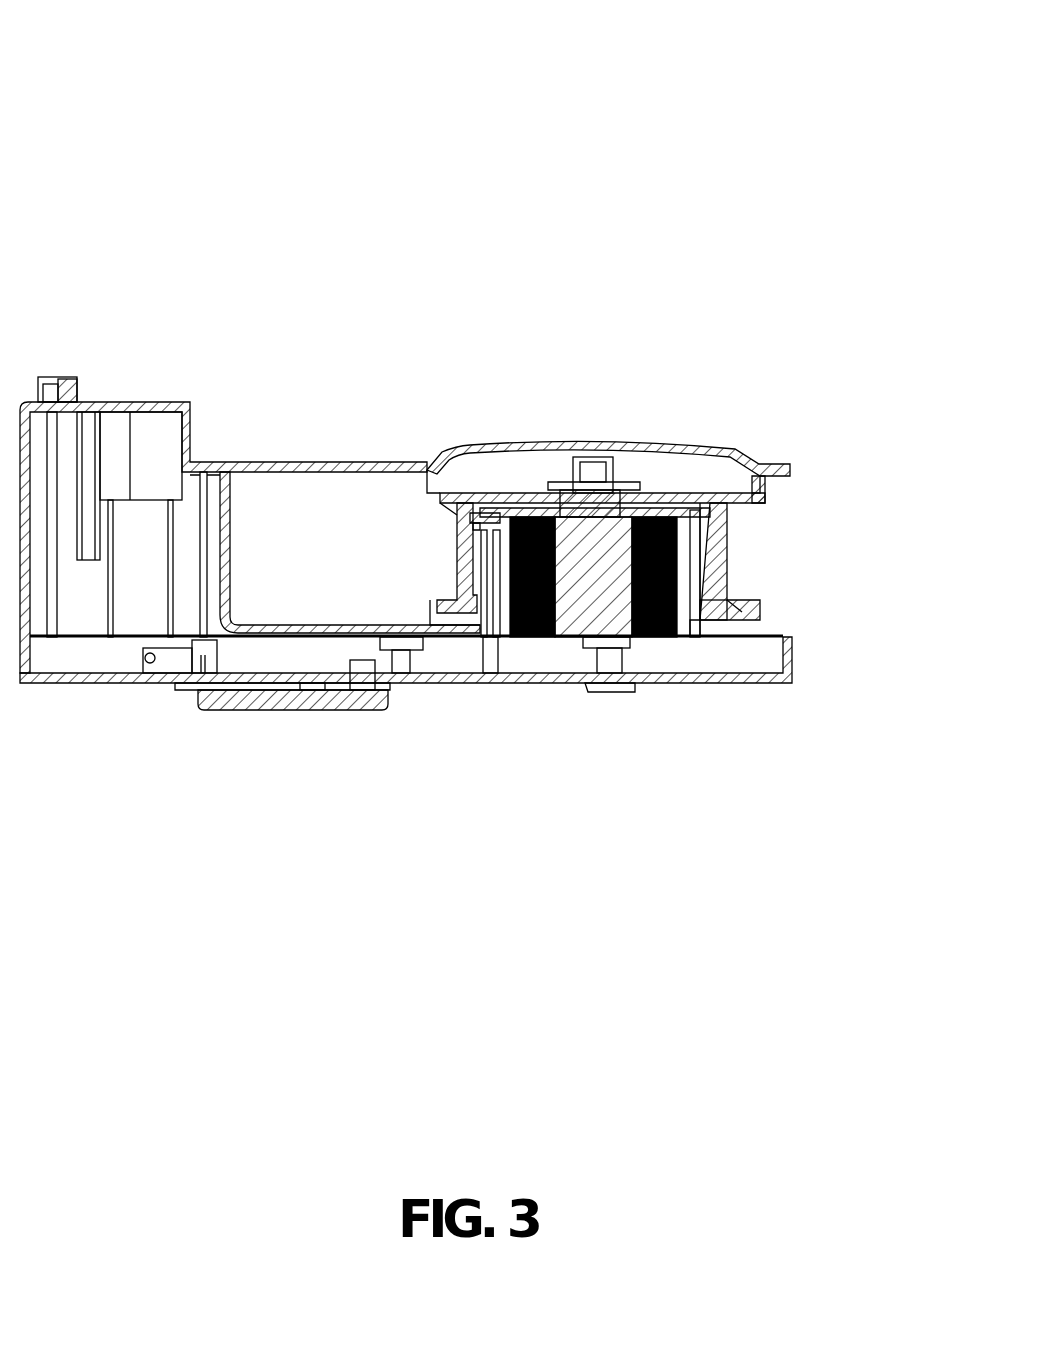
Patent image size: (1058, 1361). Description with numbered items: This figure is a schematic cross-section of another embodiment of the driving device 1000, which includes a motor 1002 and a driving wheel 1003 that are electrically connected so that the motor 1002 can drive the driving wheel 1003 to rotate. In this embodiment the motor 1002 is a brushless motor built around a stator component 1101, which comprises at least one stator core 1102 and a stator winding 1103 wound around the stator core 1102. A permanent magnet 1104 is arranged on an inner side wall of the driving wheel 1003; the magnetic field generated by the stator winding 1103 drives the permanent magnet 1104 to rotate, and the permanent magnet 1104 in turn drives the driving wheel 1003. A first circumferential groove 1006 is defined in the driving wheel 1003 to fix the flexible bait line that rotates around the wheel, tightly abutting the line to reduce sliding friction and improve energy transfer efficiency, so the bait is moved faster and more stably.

The driving device 1000 is at (335, 168).
The motor 1002 is at (500, 603).
The driving wheel 1003 is at (460, 555).
The first circumferential groove 1006 is at (718, 590).
The stator component 1101 is at (440, 817).
The stator core 1102 is at (610, 595).
The stator winding 1103 is at (658, 637).
The permanent magnet 1104 is at (475, 530).